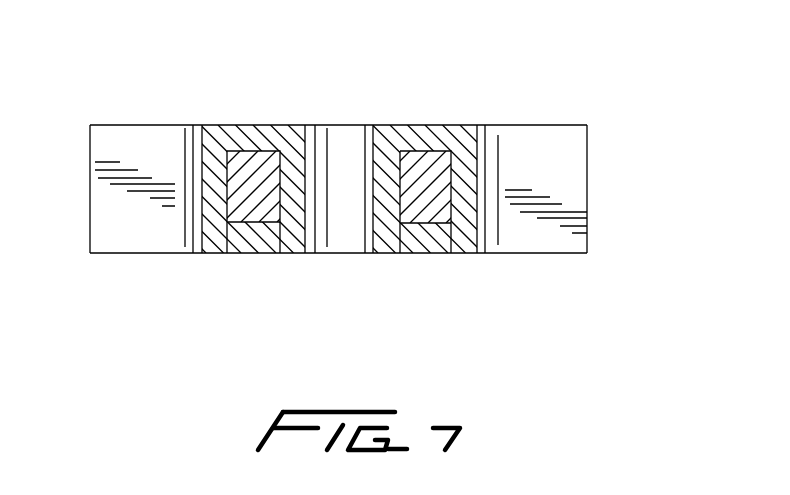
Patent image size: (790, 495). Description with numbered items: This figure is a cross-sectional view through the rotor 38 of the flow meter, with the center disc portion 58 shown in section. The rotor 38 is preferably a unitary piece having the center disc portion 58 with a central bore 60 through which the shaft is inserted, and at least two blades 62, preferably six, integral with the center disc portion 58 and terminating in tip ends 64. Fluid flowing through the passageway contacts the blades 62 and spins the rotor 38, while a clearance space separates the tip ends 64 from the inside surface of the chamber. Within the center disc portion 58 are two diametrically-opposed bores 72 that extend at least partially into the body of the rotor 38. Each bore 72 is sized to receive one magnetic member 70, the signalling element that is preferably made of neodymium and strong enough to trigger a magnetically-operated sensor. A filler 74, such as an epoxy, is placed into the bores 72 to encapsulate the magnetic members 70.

The rotor 38 is at (642, 95).
The center disc portion 58 is at (272, 140).
The central bore 60 is at (361, 95).
The blades 62 is at (158, 150).
The tip ends 64 is at (90, 220).
The magnetic member 70 is at (260, 181).
The bores 72 is at (230, 194).
The filler 74 is at (262, 243).